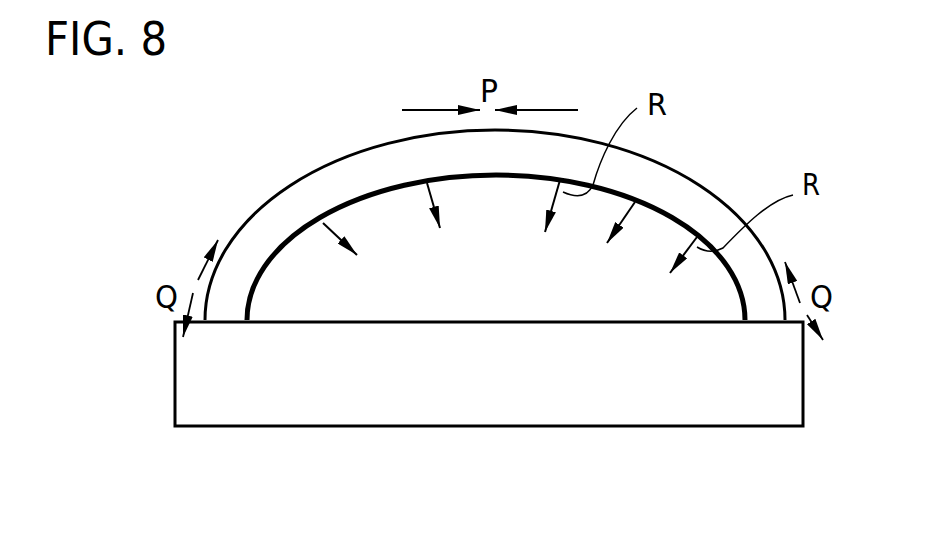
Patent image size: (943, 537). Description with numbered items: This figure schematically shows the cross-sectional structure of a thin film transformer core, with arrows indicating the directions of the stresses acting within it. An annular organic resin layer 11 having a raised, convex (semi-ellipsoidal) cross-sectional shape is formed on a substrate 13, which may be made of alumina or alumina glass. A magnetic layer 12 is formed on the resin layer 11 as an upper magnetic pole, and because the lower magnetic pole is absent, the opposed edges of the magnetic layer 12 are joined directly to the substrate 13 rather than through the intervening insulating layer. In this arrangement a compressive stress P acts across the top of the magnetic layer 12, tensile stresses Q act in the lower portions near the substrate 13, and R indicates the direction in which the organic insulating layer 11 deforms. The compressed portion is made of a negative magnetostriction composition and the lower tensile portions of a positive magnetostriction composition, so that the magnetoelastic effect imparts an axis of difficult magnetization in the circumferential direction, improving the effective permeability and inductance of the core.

The organic resin layer 11 is at (520, 290).
The magnetic layer 12 is at (260, 233).
The substrate 13 is at (357, 397).